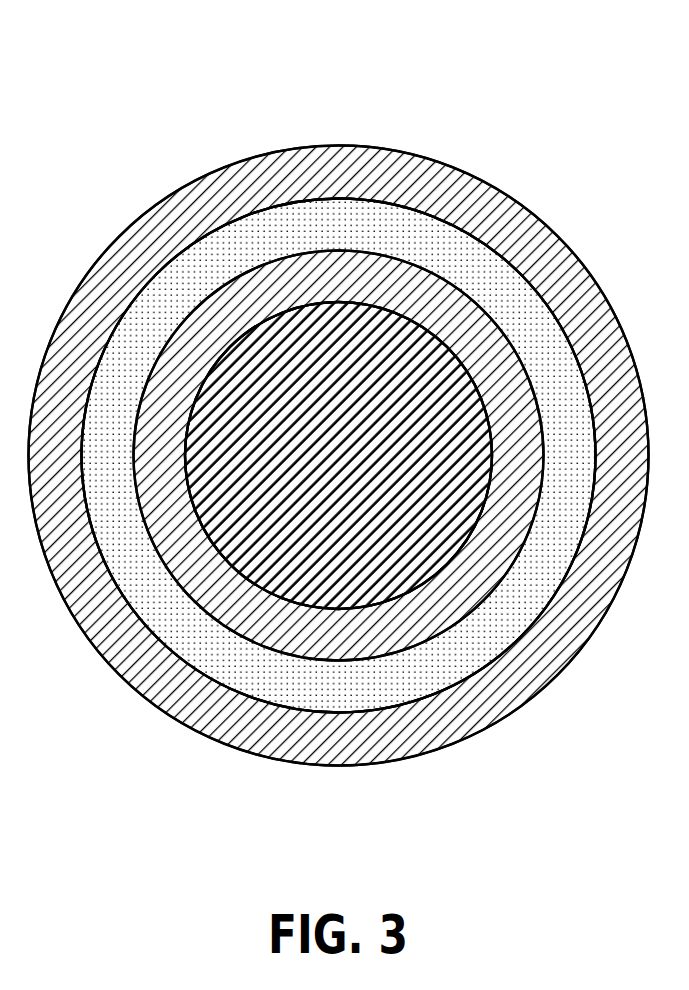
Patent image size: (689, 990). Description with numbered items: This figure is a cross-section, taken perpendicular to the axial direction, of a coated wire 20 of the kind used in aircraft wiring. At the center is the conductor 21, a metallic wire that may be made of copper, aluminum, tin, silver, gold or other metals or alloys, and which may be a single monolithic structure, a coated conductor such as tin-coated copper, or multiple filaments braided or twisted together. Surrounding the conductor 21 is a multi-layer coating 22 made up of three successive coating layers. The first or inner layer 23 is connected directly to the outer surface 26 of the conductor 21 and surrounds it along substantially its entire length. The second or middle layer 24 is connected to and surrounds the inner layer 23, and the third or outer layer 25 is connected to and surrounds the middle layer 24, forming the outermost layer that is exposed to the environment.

The coated wire 20 is at (208, 163).
The conductor 21 is at (282, 490).
The multi-layer coating 22 is at (163, 247).
The inner layer 23 is at (467, 310).
The middle layer 24 is at (418, 233).
The outer layer 25 is at (343, 173).
The outer surface 26 is at (463, 543).